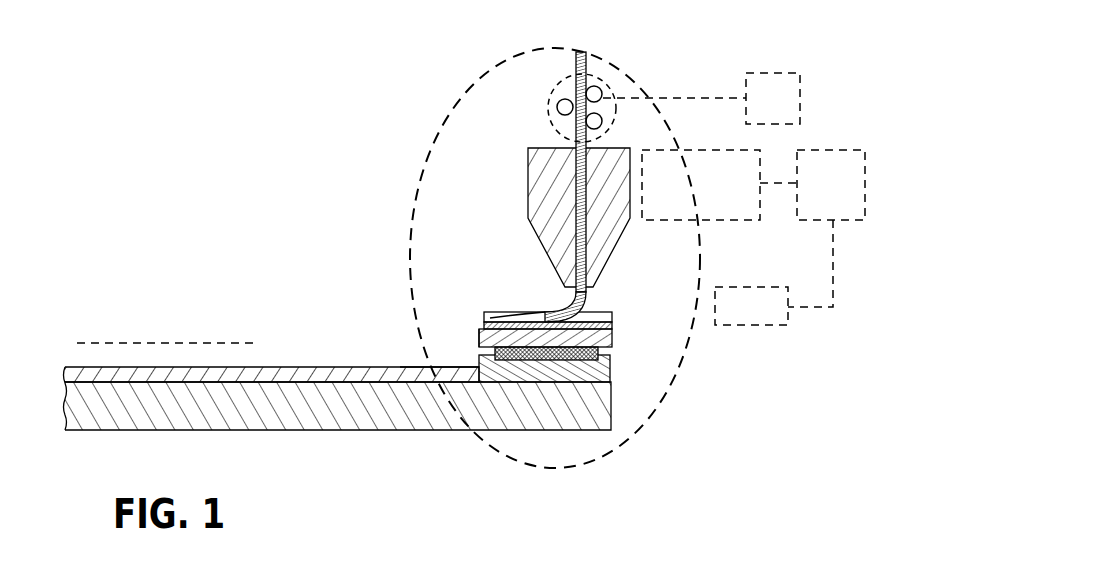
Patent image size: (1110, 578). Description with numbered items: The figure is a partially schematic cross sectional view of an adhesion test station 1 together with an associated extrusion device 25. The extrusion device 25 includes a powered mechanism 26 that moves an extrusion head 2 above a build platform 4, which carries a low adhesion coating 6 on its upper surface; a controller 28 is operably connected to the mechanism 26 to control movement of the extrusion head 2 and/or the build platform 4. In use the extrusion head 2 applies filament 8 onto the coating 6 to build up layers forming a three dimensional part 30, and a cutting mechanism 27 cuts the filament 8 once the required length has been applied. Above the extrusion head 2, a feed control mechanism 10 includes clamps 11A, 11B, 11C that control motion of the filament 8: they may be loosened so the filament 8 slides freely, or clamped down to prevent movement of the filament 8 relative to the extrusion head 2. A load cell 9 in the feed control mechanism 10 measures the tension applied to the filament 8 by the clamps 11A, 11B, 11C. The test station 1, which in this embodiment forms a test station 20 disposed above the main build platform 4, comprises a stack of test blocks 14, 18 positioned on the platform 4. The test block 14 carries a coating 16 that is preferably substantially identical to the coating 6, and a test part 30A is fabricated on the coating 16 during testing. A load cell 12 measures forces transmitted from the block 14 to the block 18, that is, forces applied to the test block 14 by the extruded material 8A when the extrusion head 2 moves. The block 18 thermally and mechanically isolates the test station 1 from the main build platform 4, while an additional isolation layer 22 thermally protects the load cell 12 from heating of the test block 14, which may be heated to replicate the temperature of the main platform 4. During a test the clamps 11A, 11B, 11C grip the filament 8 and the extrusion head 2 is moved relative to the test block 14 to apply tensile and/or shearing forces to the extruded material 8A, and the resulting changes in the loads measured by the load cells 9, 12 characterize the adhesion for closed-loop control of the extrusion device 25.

The test station 1 is at (625, 317).
The extrusion head 2 is at (526, 196).
The build platform 4 is at (613, 402).
The low adhesion coating 6 is at (303, 366).
The filament 8 is at (589, 62).
The extruded material 8A is at (554, 300).
The load cell 9 is at (802, 90).
The feed control mechanism 10 is at (552, 127).
The clamp 11A is at (557, 108).
The clamp 11B is at (603, 96).
The clamp 11C is at (603, 121).
The load cell 12 is at (439, 367).
The test block 14 is at (473, 334).
The coating 16 is at (593, 321).
The block 18 is at (613, 370).
The test station 20 is at (434, 142).
The isolation layer 22 is at (613, 346).
The extrusion device 25 is at (377, 177).
The powered mechanism 26 is at (711, 222).
The cutting mechanism 27 is at (760, 326).
The controller 28 is at (818, 150).
The three dimensional part 30 is at (165, 342).
The test part 30A is at (496, 311).